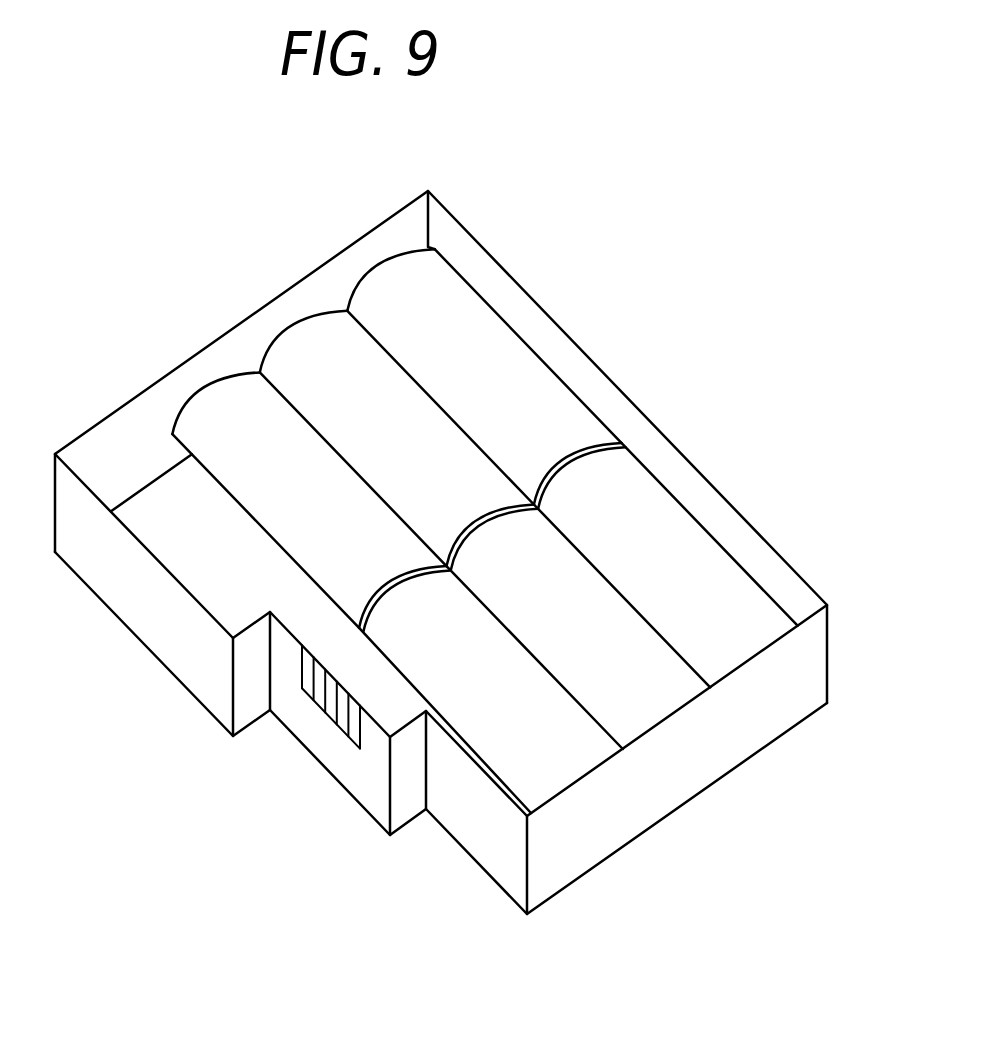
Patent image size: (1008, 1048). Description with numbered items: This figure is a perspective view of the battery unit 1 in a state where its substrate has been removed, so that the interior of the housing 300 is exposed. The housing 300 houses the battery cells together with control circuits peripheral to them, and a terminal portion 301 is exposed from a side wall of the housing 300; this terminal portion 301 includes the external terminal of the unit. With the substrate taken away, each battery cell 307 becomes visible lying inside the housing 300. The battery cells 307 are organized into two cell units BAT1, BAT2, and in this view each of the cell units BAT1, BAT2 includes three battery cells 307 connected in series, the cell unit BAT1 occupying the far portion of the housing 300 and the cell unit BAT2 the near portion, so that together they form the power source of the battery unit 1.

The battery unit 1 is at (892, 232).
The housing 300 is at (762, 757).
The terminal portion 301 is at (342, 732).
The battery cell 307 is at (557, 410).
The cell unit BAT1 is at (422, 409).
The cell unit BAT2 is at (773, 518).